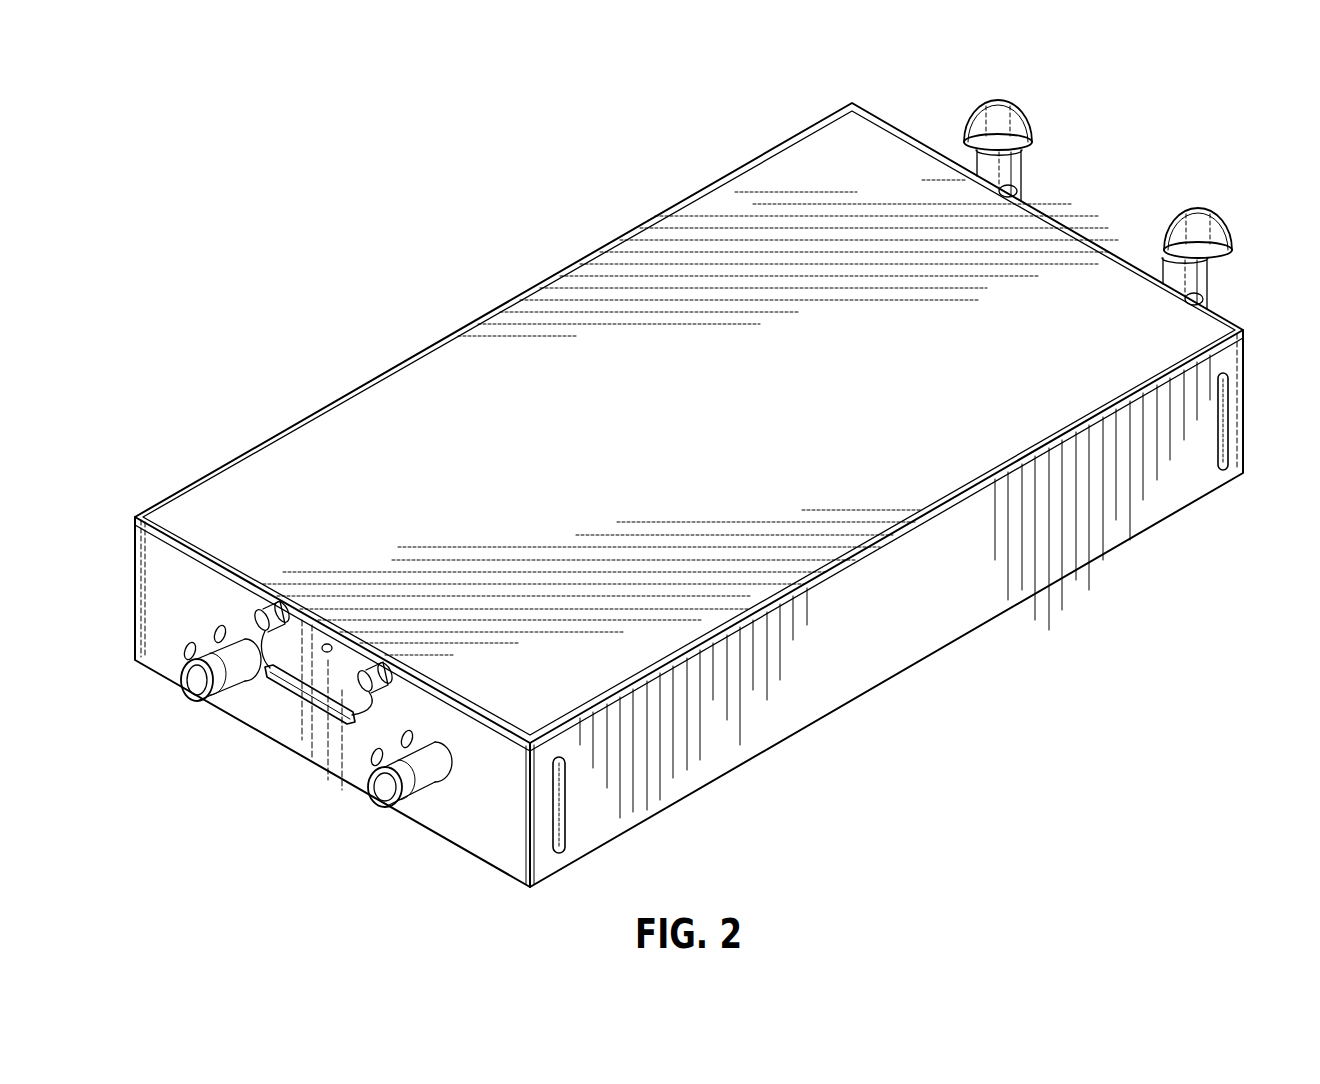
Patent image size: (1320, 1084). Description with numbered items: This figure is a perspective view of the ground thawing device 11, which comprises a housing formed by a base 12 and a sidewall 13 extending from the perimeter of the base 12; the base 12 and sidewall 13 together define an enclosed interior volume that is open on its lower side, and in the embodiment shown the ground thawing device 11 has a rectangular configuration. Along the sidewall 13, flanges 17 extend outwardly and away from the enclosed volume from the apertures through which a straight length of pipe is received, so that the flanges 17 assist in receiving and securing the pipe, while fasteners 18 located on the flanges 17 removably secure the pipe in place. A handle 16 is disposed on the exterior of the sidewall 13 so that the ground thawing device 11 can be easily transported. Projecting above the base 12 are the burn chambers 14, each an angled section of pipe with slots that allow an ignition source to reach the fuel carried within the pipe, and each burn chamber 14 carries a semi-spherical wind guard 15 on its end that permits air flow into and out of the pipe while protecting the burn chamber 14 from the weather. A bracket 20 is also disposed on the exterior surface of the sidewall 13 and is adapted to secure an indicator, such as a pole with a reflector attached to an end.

The ground thawing device 11 is at (1173, 91).
The base 12 is at (352, 468).
The sidewall 13 is at (870, 657).
The burn chamber 14 is at (1210, 281).
The semi-spherical wind guard 15 is at (1195, 207).
The handle 16 is at (297, 688).
The flange 17 is at (383, 806).
The fastener 18 is at (222, 635).
The bracket 20 is at (563, 807).